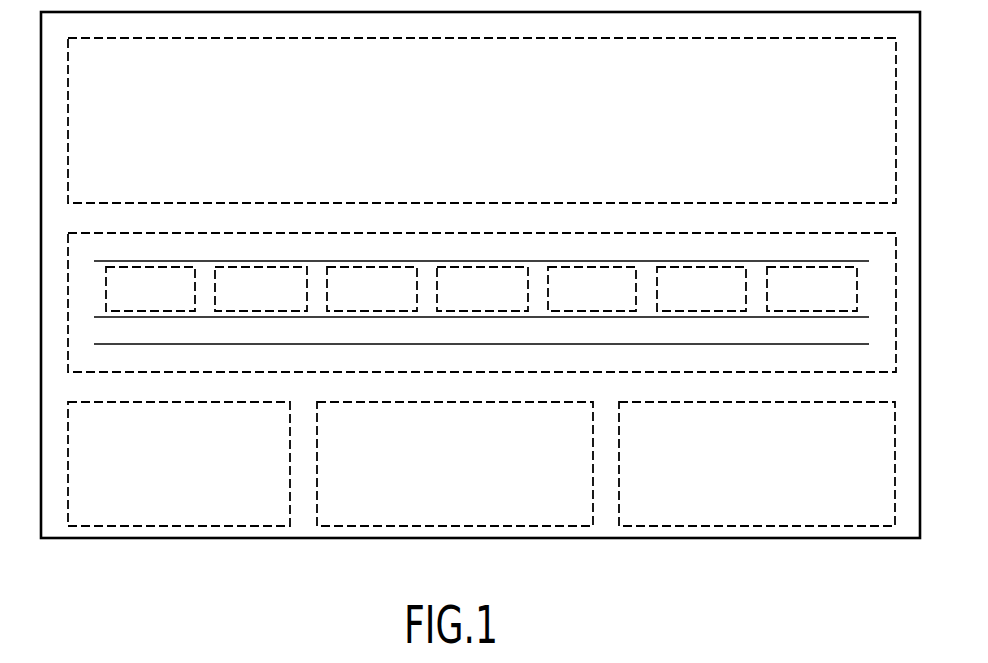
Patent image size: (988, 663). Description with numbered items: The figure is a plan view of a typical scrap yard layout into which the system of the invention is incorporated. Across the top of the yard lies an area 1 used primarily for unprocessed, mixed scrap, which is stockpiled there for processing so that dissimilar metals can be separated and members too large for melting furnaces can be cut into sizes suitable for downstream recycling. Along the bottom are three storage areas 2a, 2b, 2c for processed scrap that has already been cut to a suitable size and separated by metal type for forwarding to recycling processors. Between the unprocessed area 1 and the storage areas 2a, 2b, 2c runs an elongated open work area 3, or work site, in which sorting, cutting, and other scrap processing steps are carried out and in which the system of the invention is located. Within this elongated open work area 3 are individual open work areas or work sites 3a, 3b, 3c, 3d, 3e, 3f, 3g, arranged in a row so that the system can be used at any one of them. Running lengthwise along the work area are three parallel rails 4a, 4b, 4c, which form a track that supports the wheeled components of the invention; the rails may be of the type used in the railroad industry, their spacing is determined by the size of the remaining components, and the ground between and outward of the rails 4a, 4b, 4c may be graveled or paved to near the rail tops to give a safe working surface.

The area for unprocessed mixed scrap 1 is at (426, 117).
The processed scrap storage area 2a is at (163, 453).
The processed scrap storage area 2b is at (439, 467).
The processed scrap storage area 2c is at (739, 468).
The elongated open work area 3 is at (419, 303).
The individual open work area 3a is at (142, 301).
The individual open work area 3b is at (253, 301).
The individual open work area 3c is at (363, 301).
The individual open work area 3d is at (471, 301).
The individual open work area 3e is at (584, 301).
The individual open work area 3f is at (692, 301).
The individual open work area 3g is at (804, 301).
The parallel rail 4a is at (147, 261).
The parallel rail 4b is at (258, 317).
The parallel rail 4c is at (370, 343).